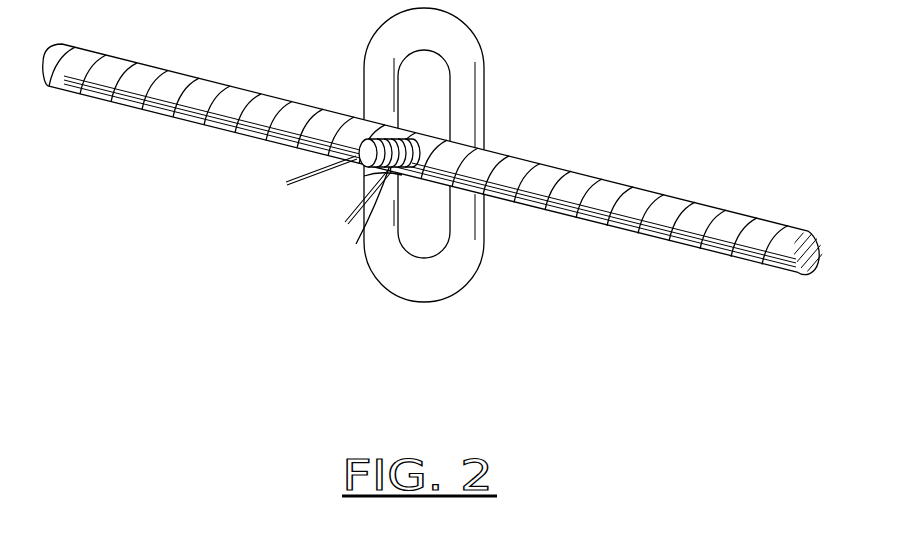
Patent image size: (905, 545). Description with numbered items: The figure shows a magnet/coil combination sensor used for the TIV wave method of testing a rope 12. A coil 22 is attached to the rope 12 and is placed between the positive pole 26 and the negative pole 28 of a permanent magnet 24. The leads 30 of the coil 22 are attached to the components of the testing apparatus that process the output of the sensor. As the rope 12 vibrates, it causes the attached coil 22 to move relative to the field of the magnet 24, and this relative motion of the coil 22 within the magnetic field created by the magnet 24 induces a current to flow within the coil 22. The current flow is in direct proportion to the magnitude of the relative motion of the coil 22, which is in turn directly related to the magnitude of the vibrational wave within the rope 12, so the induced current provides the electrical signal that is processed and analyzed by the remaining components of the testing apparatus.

The rope 12 is at (685, 243).
The coil 22 is at (364, 153).
The permanent magnet 24 is at (500, 112).
The positive pole 26 is at (418, 129).
The negative pole 28 is at (362, 215).
The leads 30 is at (303, 172).